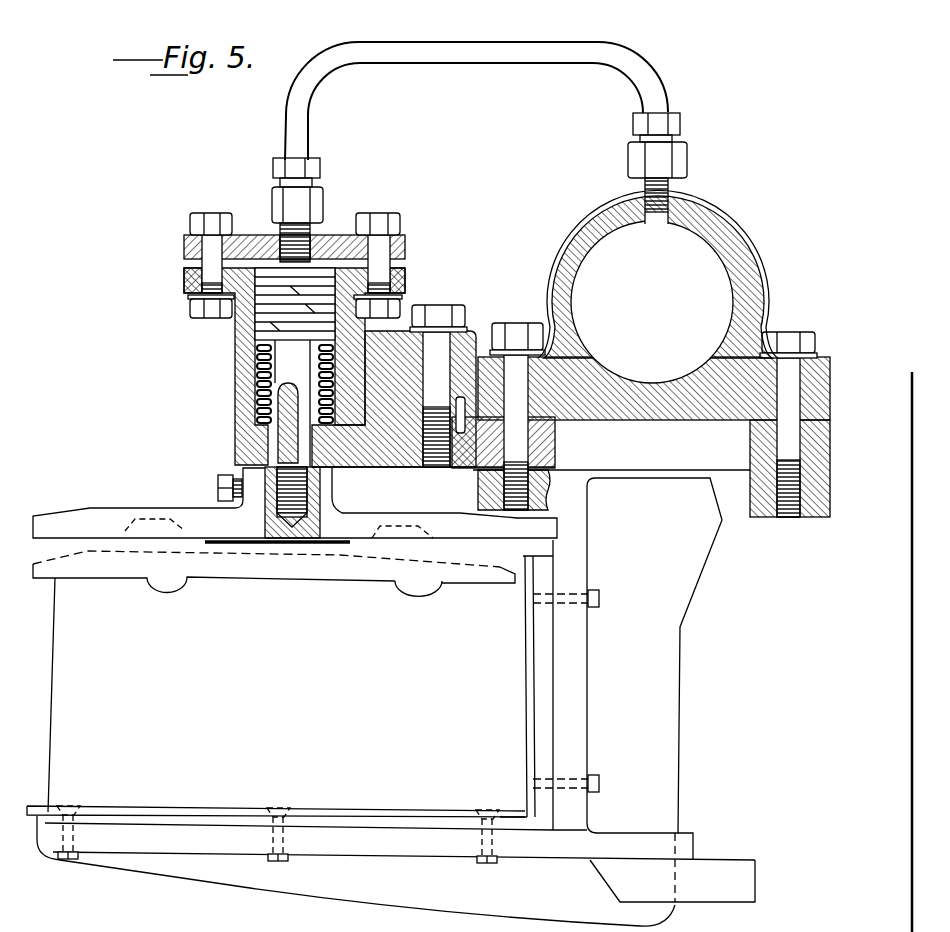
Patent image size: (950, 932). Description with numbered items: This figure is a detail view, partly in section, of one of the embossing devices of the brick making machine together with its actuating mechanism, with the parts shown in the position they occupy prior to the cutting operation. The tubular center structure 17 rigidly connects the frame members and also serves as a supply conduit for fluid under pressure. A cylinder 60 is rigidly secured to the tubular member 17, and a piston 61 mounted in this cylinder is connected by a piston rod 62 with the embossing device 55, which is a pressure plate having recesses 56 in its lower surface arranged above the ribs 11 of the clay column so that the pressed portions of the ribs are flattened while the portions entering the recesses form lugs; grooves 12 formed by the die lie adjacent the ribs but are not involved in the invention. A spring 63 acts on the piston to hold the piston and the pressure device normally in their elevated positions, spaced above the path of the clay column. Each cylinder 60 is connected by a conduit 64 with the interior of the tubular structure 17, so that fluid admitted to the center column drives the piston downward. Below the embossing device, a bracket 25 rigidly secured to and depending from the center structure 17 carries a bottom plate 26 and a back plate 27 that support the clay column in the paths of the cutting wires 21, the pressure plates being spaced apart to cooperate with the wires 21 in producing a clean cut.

The conduit 64 is at (483, 52).
The tubular center structure 17 is at (757, 270).
The piston 61 is at (265, 323).
The cylinder 60 is at (233, 360).
The piston rod 62 is at (292, 403).
The spring 63 is at (260, 404).
The cutting wires 21 is at (483, 358).
The embossing device 55 is at (358, 522).
The recess 56 is at (185, 527).
The continuous ribs 11 is at (403, 581).
The continuous grooves 12 is at (418, 595).
The back plate 27 is at (528, 720).
The bottom plate 26 is at (232, 807).
The bracket 25 is at (654, 690).